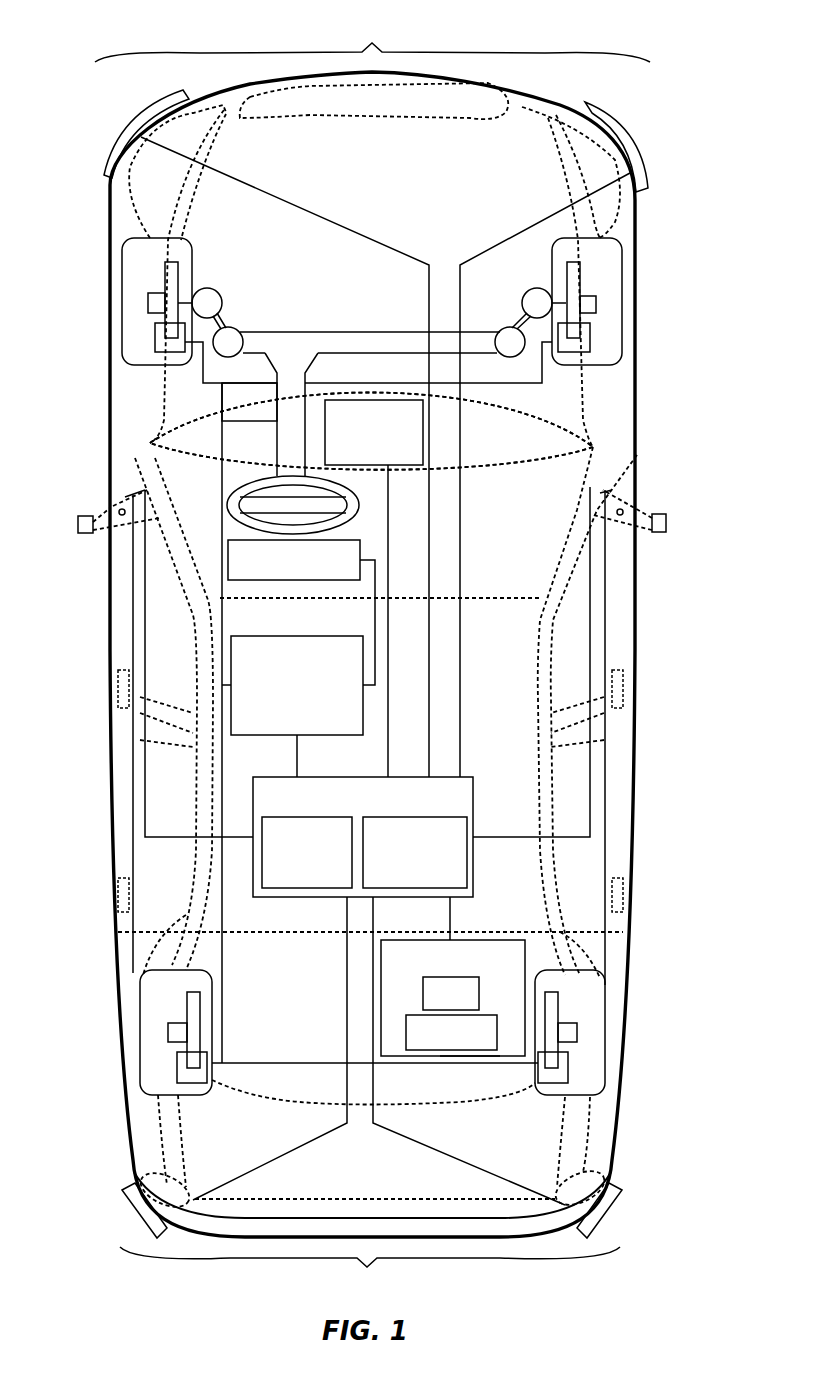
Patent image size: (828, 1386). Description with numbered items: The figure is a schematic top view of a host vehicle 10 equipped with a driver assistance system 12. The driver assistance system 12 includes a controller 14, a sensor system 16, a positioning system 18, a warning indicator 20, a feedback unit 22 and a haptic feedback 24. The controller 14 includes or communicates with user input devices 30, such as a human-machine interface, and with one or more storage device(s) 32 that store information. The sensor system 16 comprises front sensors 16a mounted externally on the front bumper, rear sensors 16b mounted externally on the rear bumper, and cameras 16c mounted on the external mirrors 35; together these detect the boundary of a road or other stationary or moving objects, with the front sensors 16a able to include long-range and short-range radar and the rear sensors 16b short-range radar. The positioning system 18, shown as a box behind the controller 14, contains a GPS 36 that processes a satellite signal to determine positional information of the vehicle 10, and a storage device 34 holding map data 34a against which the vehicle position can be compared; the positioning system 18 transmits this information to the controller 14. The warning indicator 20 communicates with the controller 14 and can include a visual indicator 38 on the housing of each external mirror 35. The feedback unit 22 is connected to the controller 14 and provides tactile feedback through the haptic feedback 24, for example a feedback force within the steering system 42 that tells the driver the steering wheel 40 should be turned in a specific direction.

The host vehicle 10 is at (682, 254).
The driver assistance system 12 is at (575, 484).
The controller 14 is at (478, 870).
The sensor system 16 is at (372, 658).
The front sensors 16a is at (125, 135).
The rear sensors 16b is at (132, 1213).
The cameras 16c is at (78, 525).
The positioning system 18 is at (381, 952).
The warning indicator 20 is at (423, 450).
The feedback unit 22 is at (252, 738).
The haptic feedback 24 is at (228, 562).
The user input devices 30 is at (440, 817).
The storage device(s) 32 is at (291, 897).
The storage device 34 is at (467, 1056).
The map data 34a is at (406, 1032).
The external mirror 35 is at (125, 497).
The GPS 36 is at (423, 993).
The visual indicator 38 is at (120, 507).
The steering wheel 40 is at (227, 520).
The steering system 42 is at (277, 435).